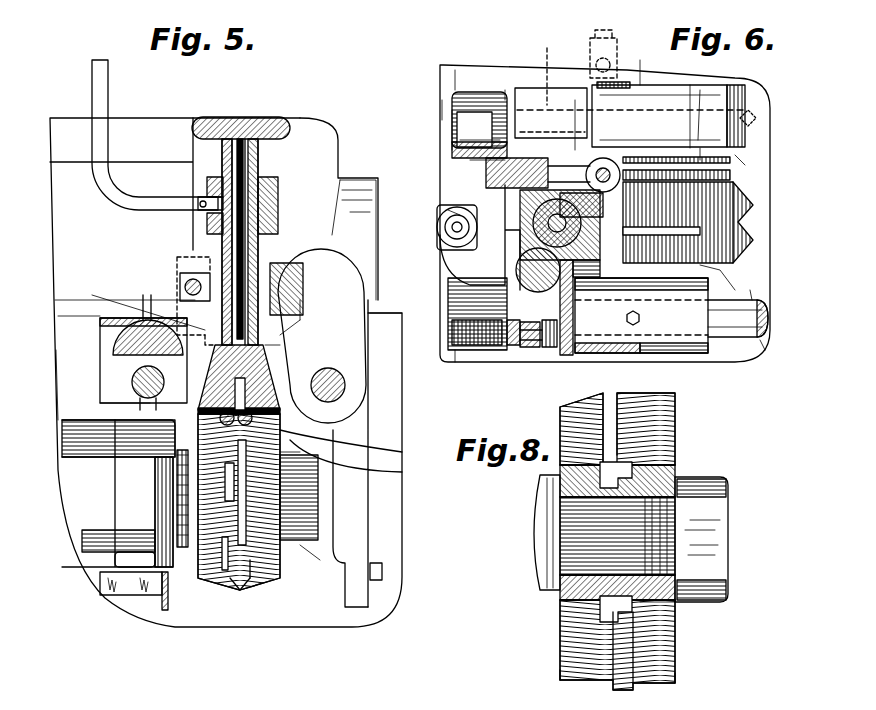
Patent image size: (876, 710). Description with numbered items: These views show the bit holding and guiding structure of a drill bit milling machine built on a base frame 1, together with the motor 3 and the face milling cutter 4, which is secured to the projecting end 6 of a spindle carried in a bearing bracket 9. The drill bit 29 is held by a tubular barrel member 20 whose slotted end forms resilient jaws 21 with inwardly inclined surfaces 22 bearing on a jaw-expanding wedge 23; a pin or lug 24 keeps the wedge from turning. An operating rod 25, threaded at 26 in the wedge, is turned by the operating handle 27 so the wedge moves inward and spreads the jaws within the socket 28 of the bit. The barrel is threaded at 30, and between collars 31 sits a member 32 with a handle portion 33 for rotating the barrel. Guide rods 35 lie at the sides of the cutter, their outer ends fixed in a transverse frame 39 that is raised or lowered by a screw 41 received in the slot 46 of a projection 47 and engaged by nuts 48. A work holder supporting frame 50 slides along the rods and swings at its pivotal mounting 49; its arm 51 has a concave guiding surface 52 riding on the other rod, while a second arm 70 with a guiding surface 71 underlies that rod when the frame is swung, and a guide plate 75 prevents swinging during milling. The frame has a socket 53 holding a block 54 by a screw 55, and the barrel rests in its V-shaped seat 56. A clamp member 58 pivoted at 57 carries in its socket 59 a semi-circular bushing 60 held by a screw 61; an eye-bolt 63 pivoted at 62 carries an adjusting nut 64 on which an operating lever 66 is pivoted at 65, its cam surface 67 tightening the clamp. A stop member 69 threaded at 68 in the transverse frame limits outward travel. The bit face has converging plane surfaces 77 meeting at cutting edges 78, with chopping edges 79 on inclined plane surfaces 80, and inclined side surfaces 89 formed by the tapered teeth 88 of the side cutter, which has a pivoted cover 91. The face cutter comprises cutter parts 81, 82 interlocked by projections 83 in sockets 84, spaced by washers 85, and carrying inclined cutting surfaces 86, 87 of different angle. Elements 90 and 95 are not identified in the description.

In FIG. 5, the base frame 1 is at (55, 458).
In FIG. 6, the base frame 1 is at (480, 370).
In FIG. 5, the motor 3 is at (372, 180).
In FIG. 5, the face milling cutter 4 is at (285, 567).
In FIG. 6, the face milling cutter 4 is at (700, 185).
In FIG. 8, the face milling cutter 4 is at (560, 597).
In FIG. 8, the projecting end of spindle 6 is at (568, 540).
In FIG. 5, the bearing bracket 9 is at (78, 500).
In FIG. 6, the bearing bracket 9 is at (700, 95).
In FIG. 5, the tubular barrel member 20 is at (258, 270).
In FIG. 6, the tubular barrel member 20 is at (500, 265).
In FIG. 5, the resilient jaws 21 is at (280, 330).
In FIG. 5, the inwardly inclined surfaces 22 is at (280, 348).
In FIG. 5, the jaw-expanding wedge 23 is at (180, 320).
In FIG. 5, the pin or lug 24 is at (175, 388).
In FIG. 5, the operating rod 25 is at (200, 268).
In FIG. 6, the operating rod 25 is at (520, 240).
In FIG. 5, the threaded portion of operating rod 26 is at (300, 310).
In FIG. 5, the operating handle 27 is at (212, 118).
In FIG. 5, the socket of drill bit 28 is at (338, 375).
In FIG. 5, the drill bit 29 is at (132, 304).
In FIG. 5, the threaded portion of barrel 30 is at (207, 188).
In FIG. 5, the collars 31 is at (278, 200).
In FIG. 5, the member 32 is at (205, 222).
In FIG. 5, the handle portion 33 is at (92, 72).
In FIG. 5, the cylindric guide rods 35 is at (110, 388).
In FIG. 6, the cylindric guide rods 35 is at (745, 80).
In FIG. 6, the transverse frame 39 is at (470, 95).
In FIG. 6, the screw 41 is at (450, 232).
In FIG. 6, the slot 46 is at (445, 210).
In FIG. 6, the projection 47 is at (458, 205).
In FIG. 6, the nuts 48 is at (445, 226).
In FIG. 5, the pivotal mounting 49 is at (352, 395).
In FIG. 5, the work holder supporting frame 50 is at (320, 245).
In FIG. 6, the work holder supporting frame 50 is at (688, 340).
In FIG. 5, the arm 51 is at (180, 285).
In FIG. 5, the concave guiding surface 52 is at (79, 321).
In FIG. 6, the socket 53 is at (668, 130).
In FIG. 6, the block 54 is at (640, 80).
In FIG. 6, the screw 55 is at (600, 330).
In FIG. 6, the V-shaped seat 56 is at (537, 142).
In FIG. 6, the pivot of clamp member 57 is at (470, 325).
In FIG. 6, the clamp member 58 is at (520, 205).
In FIG. 6, the socket of clamp member 59 is at (520, 280).
In FIG. 6, the semi-circular bushing 60 is at (492, 128).
In FIG. 6, the screw 61 is at (500, 172).
In FIG. 6, the pivot of eye-bolt 62 is at (648, 85).
In FIG. 5, the eye-bolt 63 is at (240, 300).
In FIG. 6, the eye-bolt 63 is at (580, 142).
In FIG. 6, the adjusting nut 64 is at (513, 148).
In FIG. 6, the pivot of operating lever 65 is at (470, 112).
In FIG. 6, the operating lever 66 is at (495, 160).
In FIG. 6, the cam surface 67 is at (485, 140).
In FIG. 6, the threaded portion of transverse frame 68 is at (470, 350).
In FIG. 6, the stop member 69 is at (548, 348).
In FIG. 5, the arm 70 is at (352, 500).
In FIG. 6, the arm 70 is at (520, 330).
In FIG. 5, the concave guiding surface 71 is at (382, 575).
In FIG. 5, the guide plate 75 is at (110, 365).
In FIG. 6, the guide plate 75 is at (587, 95).
In FIG. 5, the converging plane surfaces 77 is at (200, 450).
In FIG. 5, the cutting edges 78 is at (225, 500).
In FIG. 5, the chopping edges 79 is at (180, 440).
In FIG. 5, the inclined plane surfaces 80 is at (195, 440).
In FIG. 8, the cutter part 81 is at (565, 620).
In FIG. 6, the cutter part 82 is at (720, 282).
In FIG. 8, the cutter part 82 is at (660, 604).
In FIG. 5, the projections 83 is at (260, 572).
In FIG. 6, the projections 83 is at (712, 316).
In FIG. 8, the projections 83 is at (556, 495).
In FIG. 5, the sockets 84 is at (232, 592).
In FIG. 6, the sockets 84 is at (678, 292).
In FIG. 8, the sockets 84 is at (660, 450).
In FIG. 8, the washers 85 is at (722, 492).
In FIG. 5, the inclined cutting surface 86 is at (278, 592).
In FIG. 6, the inclined cutting surface 86 is at (750, 300).
In FIG. 8, the inclined cutting surface 86 is at (565, 670).
In FIG. 5, the inclined cutting surface 87 is at (262, 592).
In FIG. 6, the inclined cutting surface 87 is at (760, 338).
In FIG. 8, the inclined cutting surface 87 is at (613, 685).
In FIG. 5, the tapered teeth 88 is at (215, 590).
In FIG. 6, the tapered teeth 88 is at (740, 110).
In FIG. 8, the tapered teeth 88 is at (570, 638).
In FIG. 5, the inclined side surfaces 89 is at (100, 420).
In FIG. 5, the spring 90 is at (215, 472).
In FIG. 5, the cover 91 is at (312, 120).
In FIG. 6, the wire 95 is at (546, 61).